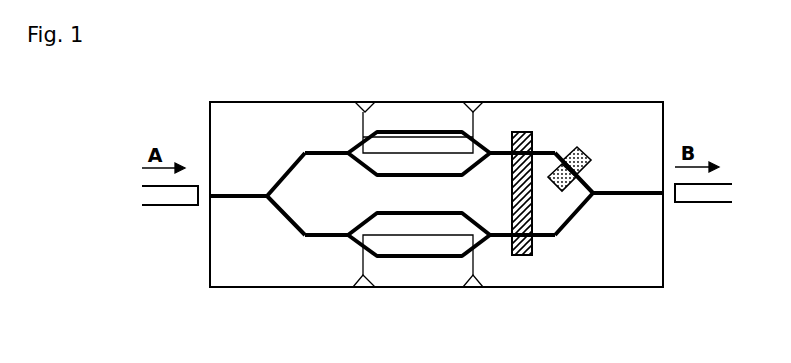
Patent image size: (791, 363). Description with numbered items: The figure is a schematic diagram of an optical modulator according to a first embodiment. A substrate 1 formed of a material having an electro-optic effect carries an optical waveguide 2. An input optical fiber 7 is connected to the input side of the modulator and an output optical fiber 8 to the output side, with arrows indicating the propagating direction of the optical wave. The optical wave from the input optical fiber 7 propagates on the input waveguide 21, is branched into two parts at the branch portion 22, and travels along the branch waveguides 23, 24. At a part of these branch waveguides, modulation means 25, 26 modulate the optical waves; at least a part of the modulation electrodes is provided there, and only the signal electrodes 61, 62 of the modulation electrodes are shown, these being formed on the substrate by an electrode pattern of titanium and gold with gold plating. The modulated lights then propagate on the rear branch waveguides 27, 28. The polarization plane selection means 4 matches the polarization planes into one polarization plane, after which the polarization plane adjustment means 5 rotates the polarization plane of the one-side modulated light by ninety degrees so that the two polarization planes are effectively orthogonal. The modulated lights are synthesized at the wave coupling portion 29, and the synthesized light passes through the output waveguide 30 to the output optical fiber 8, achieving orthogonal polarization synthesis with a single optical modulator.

The substrate 1 is at (553, 117).
The optical waveguide 2 is at (309, 130).
The polarization plane selection means 4 is at (521, 132).
The polarization plane adjustment means 5 is at (582, 148).
The input optical fiber 7 is at (170, 195).
The output optical fiber 8 is at (702, 195).
The input waveguide 21 is at (240, 196).
The branch portion 22 is at (267, 196).
The branch waveguide 23 is at (330, 152).
The branch waveguide 24 is at (327, 237).
The modulation means 25 is at (447, 124).
The modulation means 26 is at (448, 266).
The rear branch waveguide 27 is at (497, 152).
The rear branch waveguide 28 is at (499, 237).
The wave coupling portion 29 is at (595, 197).
The output waveguide 30 is at (635, 192).
The signal electrode 61 is at (368, 112).
The signal electrode 62 is at (366, 277).